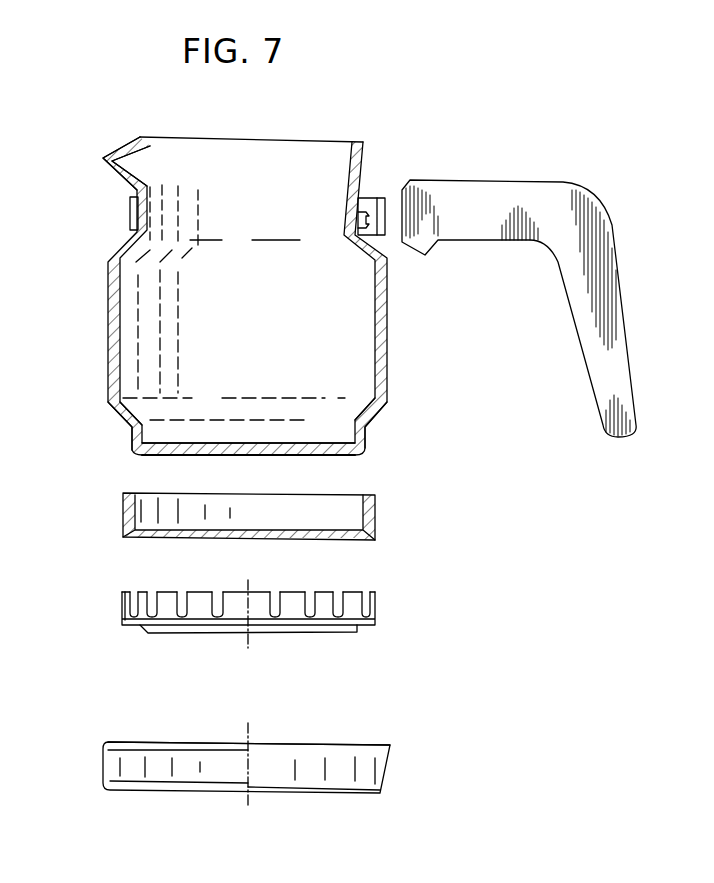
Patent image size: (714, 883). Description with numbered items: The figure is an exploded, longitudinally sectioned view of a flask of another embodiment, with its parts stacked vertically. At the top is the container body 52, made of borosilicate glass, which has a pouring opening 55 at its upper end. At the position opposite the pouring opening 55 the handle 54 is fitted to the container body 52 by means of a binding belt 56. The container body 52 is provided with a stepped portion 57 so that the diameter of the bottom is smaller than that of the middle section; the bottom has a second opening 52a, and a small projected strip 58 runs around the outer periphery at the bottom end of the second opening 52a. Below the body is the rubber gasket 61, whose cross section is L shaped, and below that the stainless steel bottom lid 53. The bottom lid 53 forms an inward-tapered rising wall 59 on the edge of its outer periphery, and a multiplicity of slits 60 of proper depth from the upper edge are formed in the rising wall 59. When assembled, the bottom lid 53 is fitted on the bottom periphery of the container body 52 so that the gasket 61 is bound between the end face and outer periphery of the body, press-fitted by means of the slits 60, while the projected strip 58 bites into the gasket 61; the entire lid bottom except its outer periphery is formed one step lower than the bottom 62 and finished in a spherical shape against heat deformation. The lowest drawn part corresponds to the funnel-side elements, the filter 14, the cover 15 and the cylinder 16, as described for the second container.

The container body 52 is at (390, 330).
The second opening 52a is at (303, 457).
The bottom lid 53 is at (375, 626).
The handle 54 is at (580, 330).
The pouring opening 55 is at (142, 137).
The binding belt 56 is at (130, 210).
The stepped portion 57 is at (127, 420).
The projected strip 58 is at (373, 450).
The rising wall 59 is at (205, 593).
The slits 60 is at (155, 595).
The rubber gasket 61 is at (375, 523).
The bottom 62 is at (140, 628).
The filter 14 is at (103, 765).
The cover 15 is at (160, 740).
The cylinder 16 is at (142, 790).